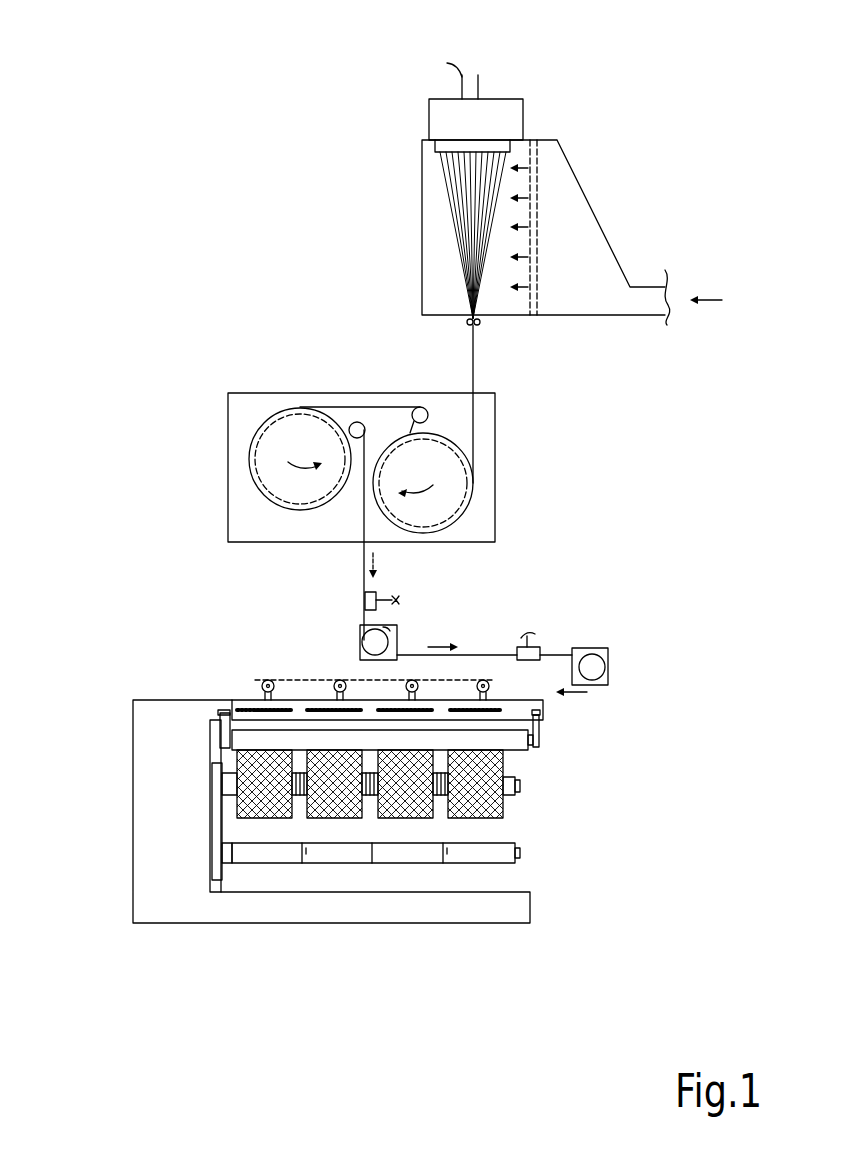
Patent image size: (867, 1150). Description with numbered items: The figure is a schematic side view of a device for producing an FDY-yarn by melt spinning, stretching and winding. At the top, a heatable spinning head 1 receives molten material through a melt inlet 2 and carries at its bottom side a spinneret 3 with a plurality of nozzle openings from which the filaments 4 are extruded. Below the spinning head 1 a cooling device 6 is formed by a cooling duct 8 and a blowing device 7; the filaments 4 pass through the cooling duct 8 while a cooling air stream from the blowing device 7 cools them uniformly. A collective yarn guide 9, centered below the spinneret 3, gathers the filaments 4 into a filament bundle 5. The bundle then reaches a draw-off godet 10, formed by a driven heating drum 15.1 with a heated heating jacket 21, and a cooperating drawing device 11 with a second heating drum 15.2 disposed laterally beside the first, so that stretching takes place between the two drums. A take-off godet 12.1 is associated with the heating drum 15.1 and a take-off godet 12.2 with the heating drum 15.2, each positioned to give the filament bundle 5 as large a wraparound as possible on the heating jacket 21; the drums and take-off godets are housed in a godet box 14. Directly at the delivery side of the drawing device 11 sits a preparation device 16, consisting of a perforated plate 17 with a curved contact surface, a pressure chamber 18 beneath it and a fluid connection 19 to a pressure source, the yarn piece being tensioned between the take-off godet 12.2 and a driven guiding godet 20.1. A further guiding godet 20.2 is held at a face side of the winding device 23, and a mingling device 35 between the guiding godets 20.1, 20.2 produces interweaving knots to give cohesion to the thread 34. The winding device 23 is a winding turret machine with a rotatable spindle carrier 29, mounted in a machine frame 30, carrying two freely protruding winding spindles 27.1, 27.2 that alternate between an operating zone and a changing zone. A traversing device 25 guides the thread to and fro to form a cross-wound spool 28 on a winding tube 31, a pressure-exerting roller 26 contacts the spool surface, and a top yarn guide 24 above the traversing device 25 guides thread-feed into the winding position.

The spinning head 1 is at (507, 115).
The melt inlet 2 is at (480, 80).
The spinneret 3 is at (483, 147).
The filaments 4 is at (445, 187).
The filament bundle 5 is at (477, 377).
The cooling device 6 is at (712, 153).
The blowing device 7 is at (510, 188).
The cooling duct 8 is at (577, 263).
The collective yarn guide 9 is at (480, 325).
The draw-off godet 10 is at (697, 435).
The drawing device 11 is at (72, 258).
The take-off godet 12.1 is at (417, 410).
The take-off godet 12.2 is at (353, 425).
The godet box 14 is at (228, 510).
The heating drum 15.1 is at (437, 465).
The heating drum 15.2 is at (280, 442).
The preparation device 16 is at (132, 552).
The perforated plate 17 is at (365, 594).
The pressure chamber 18 is at (365, 610).
The fluid connection 19 is at (377, 592).
The guiding godet 20.1 is at (378, 639).
The guiding godet 20.2 is at (590, 665).
The heating jacket 21 is at (253, 473).
The winding device 23 is at (82, 822).
The top yarn guide 24 is at (493, 685).
The traversing device 25 is at (500, 713).
The pressure-exerting roller 26 is at (498, 740).
The winding spindle 27.1 is at (518, 793).
The winding spindle 27.2 is at (520, 858).
The spool 28 is at (473, 822).
The spindle carrier 29 is at (218, 840).
The machine frame 30 is at (170, 888).
The winding tube 31 is at (455, 855).
The thread 34 is at (478, 652).
The mingling device 35 is at (539, 647).